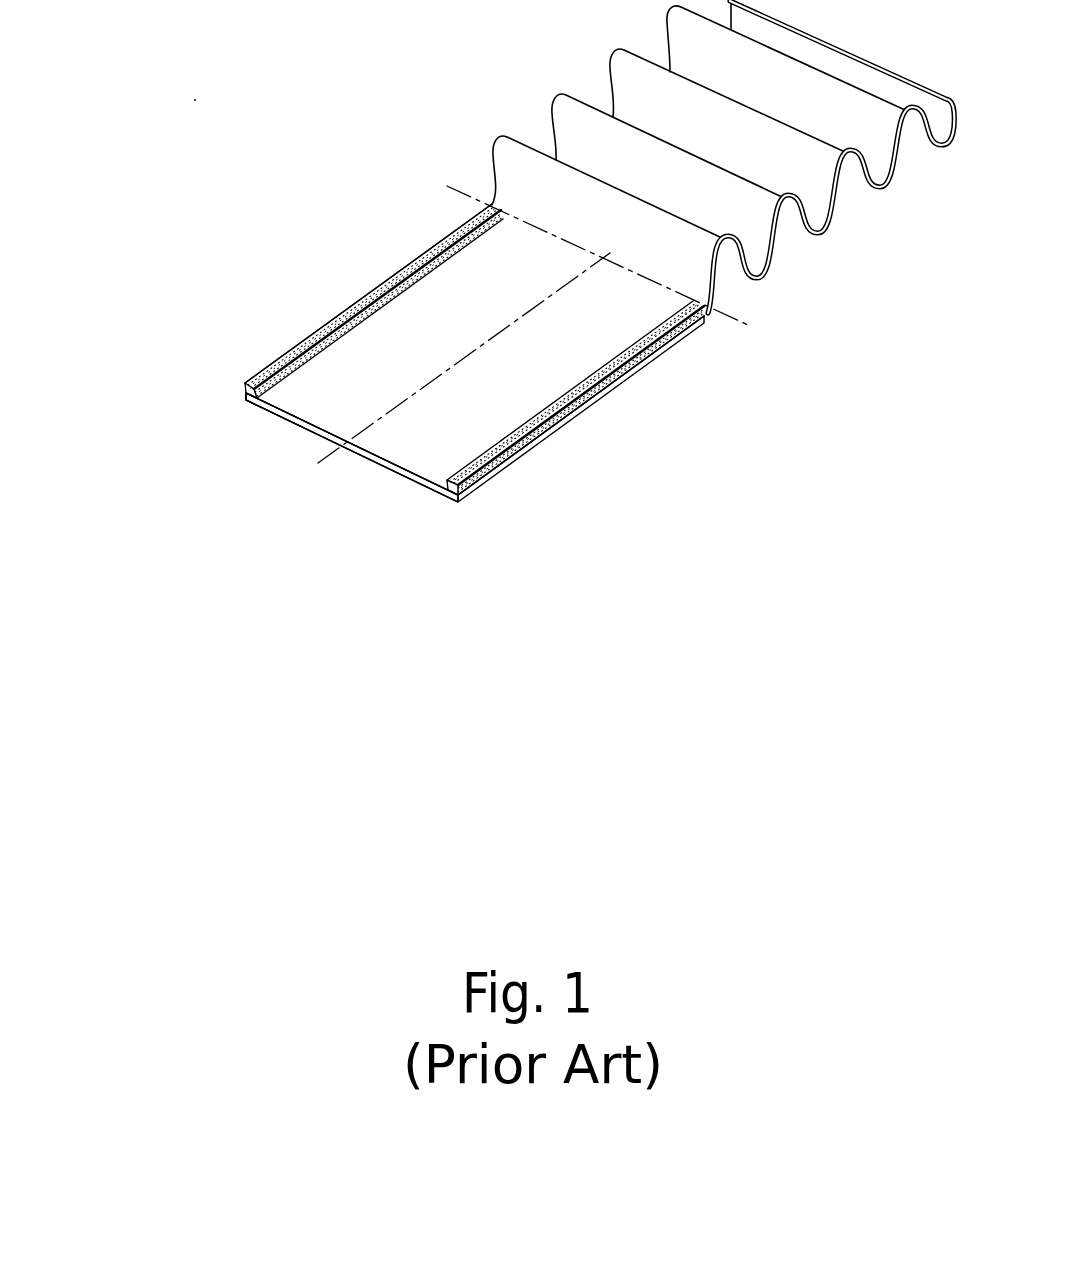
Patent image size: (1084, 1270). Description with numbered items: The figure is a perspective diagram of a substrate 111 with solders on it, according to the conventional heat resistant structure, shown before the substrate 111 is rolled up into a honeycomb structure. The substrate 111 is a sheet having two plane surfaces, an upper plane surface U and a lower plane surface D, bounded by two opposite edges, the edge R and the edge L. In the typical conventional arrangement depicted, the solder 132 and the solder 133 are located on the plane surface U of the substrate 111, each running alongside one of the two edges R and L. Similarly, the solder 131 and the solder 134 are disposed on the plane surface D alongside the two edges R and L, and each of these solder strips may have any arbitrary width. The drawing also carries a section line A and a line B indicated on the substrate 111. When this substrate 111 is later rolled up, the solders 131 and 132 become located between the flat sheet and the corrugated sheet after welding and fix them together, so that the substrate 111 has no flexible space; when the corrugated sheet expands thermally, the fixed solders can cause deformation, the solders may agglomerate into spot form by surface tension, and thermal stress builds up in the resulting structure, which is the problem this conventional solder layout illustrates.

The substrate 111 is at (485, 134).
The solder 131 is at (458, 493).
The solder 132 is at (492, 482).
The solder 133 is at (267, 368).
The solder 134 is at (245, 398).
The section line A- A is at (598, 255).
The center line B is at (447, 374).
The edge L is at (343, 307).
The edge R is at (573, 420).
The plane surface U is at (315, 395).
The plane surface D is at (378, 457).